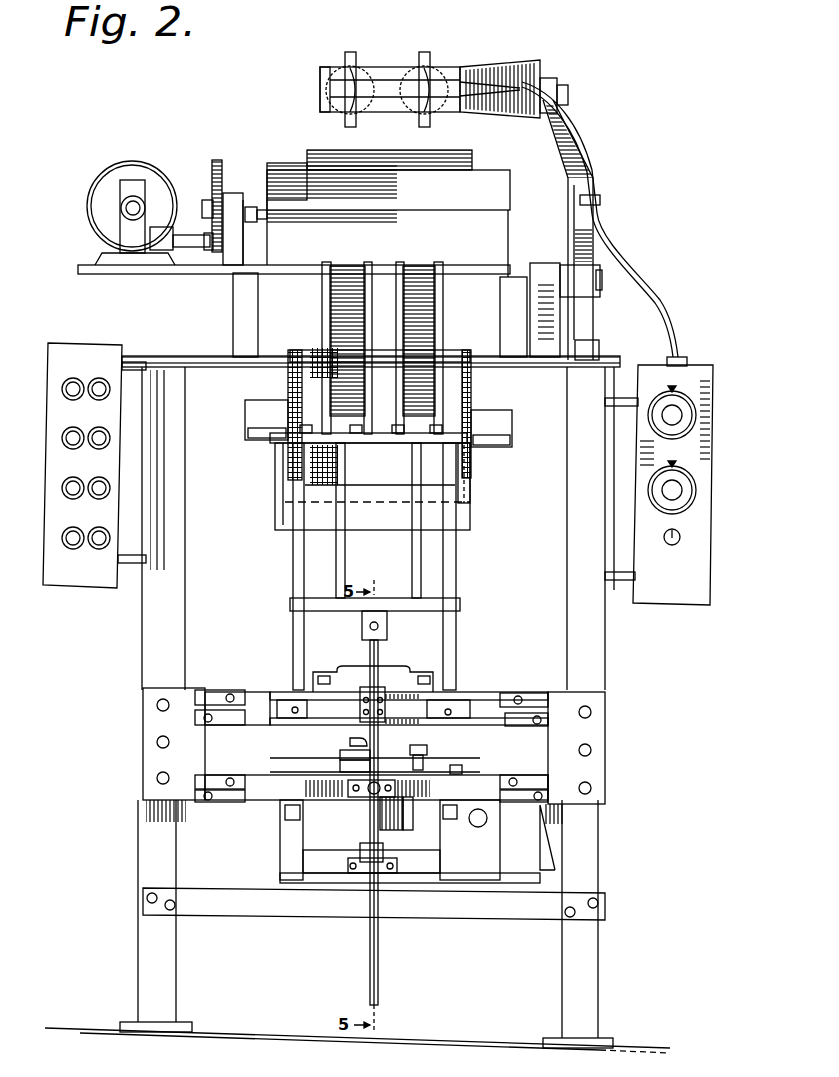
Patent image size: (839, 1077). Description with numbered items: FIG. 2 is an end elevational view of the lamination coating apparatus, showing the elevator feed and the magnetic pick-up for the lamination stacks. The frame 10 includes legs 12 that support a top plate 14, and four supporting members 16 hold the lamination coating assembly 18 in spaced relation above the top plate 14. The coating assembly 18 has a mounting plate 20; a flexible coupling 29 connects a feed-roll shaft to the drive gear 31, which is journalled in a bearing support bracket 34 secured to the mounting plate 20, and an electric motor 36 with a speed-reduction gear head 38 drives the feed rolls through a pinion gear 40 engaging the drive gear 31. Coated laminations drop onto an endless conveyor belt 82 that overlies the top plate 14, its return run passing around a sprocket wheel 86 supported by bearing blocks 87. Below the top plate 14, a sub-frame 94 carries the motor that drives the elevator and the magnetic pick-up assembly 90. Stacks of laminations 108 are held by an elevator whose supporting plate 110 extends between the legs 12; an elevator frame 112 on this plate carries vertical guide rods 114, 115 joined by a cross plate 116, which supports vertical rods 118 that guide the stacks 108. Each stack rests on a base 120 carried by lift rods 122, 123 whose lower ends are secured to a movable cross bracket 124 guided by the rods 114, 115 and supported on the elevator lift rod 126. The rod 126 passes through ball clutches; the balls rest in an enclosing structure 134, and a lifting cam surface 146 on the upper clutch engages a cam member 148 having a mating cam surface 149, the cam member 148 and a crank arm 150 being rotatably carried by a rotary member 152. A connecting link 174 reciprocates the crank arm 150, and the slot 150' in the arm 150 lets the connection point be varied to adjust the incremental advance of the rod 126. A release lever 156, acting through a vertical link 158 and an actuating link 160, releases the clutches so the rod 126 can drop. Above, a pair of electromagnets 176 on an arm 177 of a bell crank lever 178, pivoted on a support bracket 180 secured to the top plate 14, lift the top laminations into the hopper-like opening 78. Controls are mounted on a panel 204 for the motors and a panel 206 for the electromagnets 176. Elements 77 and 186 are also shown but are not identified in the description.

The frame 10 is at (606, 840).
The legs 12 is at (176, 522).
The top plate 14 is at (192, 356).
The supporting members 16 is at (240, 310).
The lamination coating assembly 18 is at (298, 158).
The mounting plate 20 is at (186, 274).
The flexible coupling 29 is at (262, 222).
The drive gear 31 is at (216, 160).
The bearing support bracket 34 is at (232, 193).
The electric motor 36 is at (130, 170).
The speed-reduction gear head 38 is at (118, 232).
The pinion gear 40 is at (204, 210).
The conveyor housing 77 is at (493, 170).
The hopper-like opening 78 is at (452, 150).
The endless conveyor belt 82 is at (455, 356).
The sprocket wheel 86 is at (288, 380).
The bearing blocks 87 is at (262, 420).
The magnetic pick-up assembly 90 is at (566, 80).
The sub-frame 94 is at (497, 893).
The stacks of motor laminations 108 is at (415, 263).
The supporting plate 110 is at (145, 752).
The elevator frame 112 is at (490, 696).
The vertical guide rod 114 is at (457, 636).
The vertical guide rod 115 is at (293, 630).
The cross plate 116 is at (470, 470).
The vertical rods 118 is at (338, 302).
The base 120 is at (408, 444).
The lift rod 122 is at (412, 572).
The lift rod 123 is at (345, 540).
The movable cross bracket 124 is at (390, 616).
The elevator lift rod 126 is at (370, 655).
The enclosing structure 134 is at (413, 819).
The lifting cam surface 146 is at (400, 746).
The cam member 148 is at (340, 752).
The cam surface 149 is at (350, 741).
The crank arm 150 is at (375, 763).
The slot 150' is at (494, 764).
The rotary member 152 is at (355, 795).
The release lever 156 is at (392, 800).
The vertical link 158 is at (380, 830).
The actuating link 160 is at (360, 855).
The connecting link 174 is at (424, 756).
The electromagnets 176 is at (424, 67).
The arm 177 is at (500, 70).
The bell crank lever 178 is at (585, 168).
The support bracket 180 is at (560, 300).
The clamp 186 is at (598, 348).
The control panel 204 is at (46, 445).
The control panel 206 is at (712, 465).